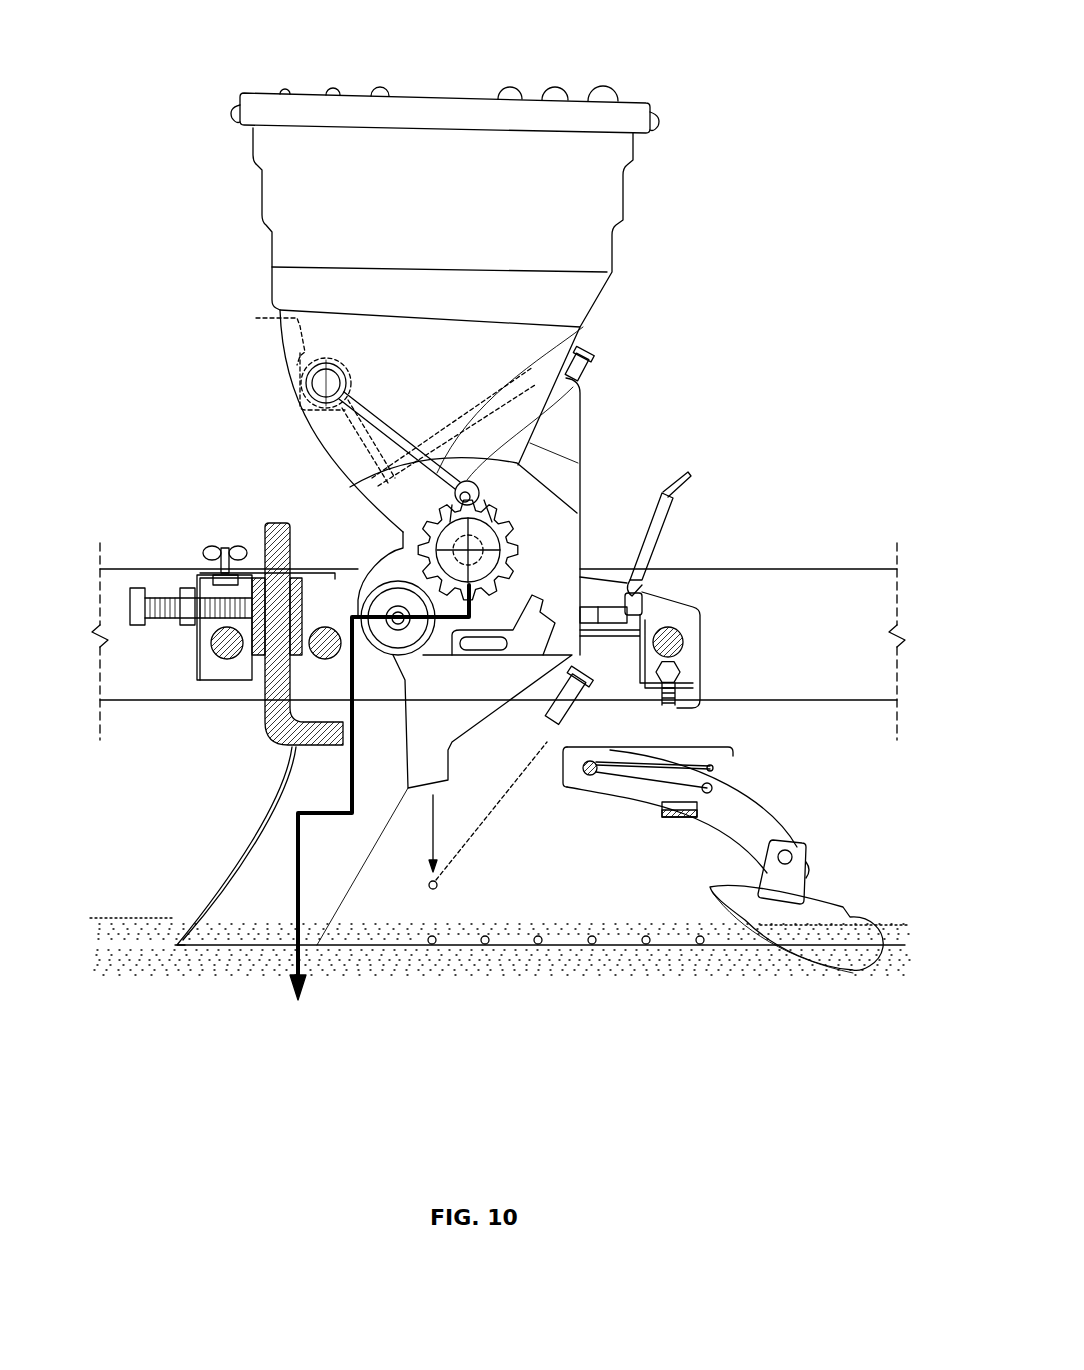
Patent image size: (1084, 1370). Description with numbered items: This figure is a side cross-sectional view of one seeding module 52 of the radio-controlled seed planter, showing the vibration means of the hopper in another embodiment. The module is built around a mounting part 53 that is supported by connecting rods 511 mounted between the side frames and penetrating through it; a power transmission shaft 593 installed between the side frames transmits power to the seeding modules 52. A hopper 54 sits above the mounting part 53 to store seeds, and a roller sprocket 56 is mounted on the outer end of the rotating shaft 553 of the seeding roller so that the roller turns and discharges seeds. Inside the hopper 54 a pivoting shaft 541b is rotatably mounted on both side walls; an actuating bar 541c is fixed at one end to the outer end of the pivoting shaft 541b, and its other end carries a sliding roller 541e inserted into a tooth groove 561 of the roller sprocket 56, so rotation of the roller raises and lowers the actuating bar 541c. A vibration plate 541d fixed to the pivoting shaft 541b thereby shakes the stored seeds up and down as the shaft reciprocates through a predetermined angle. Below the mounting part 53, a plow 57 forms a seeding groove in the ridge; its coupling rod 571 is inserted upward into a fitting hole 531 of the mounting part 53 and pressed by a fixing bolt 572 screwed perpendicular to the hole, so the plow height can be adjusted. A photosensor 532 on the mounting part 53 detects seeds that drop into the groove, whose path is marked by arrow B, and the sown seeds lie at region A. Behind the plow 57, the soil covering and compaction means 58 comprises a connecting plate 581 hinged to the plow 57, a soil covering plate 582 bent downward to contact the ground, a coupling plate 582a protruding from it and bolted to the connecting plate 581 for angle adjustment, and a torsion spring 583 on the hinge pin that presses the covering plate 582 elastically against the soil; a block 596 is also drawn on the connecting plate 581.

The seeding module 52 is at (692, 102).
The mounting part 53 is at (708, 614).
The hopper 54 is at (262, 193).
The pivoting shaft 541b is at (306, 376).
The actuating bar 541c is at (585, 343).
The vibration plate 541d is at (271, 354).
The sliding roller 541e is at (480, 490).
The rotating shaft 553 is at (497, 507).
The roller sprocket 56 is at (510, 573).
The tooth groove 561 is at (507, 540).
The connecting rod 511 is at (683, 643).
The fitting hole 531 is at (277, 655).
The photosensor 532 is at (590, 678).
The coupling rod 571 is at (265, 525).
The fixing bolt 572 is at (140, 598).
The power transmission shaft 593 is at (325, 660).
The plow 57 is at (226, 920).
The soil covering and compaction means 58 is at (735, 927).
The connecting plate 581 is at (770, 820).
The soil covering plate 582 is at (712, 990).
The coupling plate 582a is at (793, 888).
The torsion spring 583 is at (720, 785).
The stop block 596 is at (672, 818).
The seed placement area A is at (532, 955).
The seed drop path B is at (308, 992).